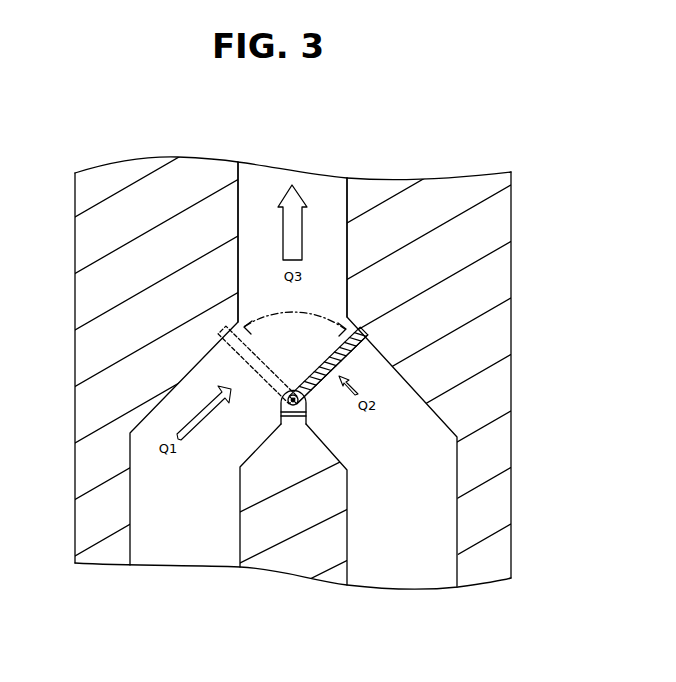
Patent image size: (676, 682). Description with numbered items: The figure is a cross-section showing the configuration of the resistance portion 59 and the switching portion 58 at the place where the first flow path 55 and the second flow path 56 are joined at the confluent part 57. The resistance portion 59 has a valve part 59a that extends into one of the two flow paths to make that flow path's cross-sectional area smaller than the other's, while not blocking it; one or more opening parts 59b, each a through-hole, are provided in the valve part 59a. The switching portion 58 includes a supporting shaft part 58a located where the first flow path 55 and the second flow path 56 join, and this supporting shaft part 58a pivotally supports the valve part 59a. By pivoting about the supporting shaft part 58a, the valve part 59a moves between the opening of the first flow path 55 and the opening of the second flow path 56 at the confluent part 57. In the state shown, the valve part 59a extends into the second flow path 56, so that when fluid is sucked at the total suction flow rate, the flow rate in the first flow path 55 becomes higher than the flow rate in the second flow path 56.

The first flow path 55 is at (131, 543).
The second flow path 56 is at (458, 560).
The confluent part 57 is at (241, 187).
The switching portion 58 is at (326, 301).
The supporting shaft part 58a is at (293, 425).
The resistance portion 59 is at (423, 348).
The valve part 59a is at (366, 330).
The opening part 59b is at (312, 357).